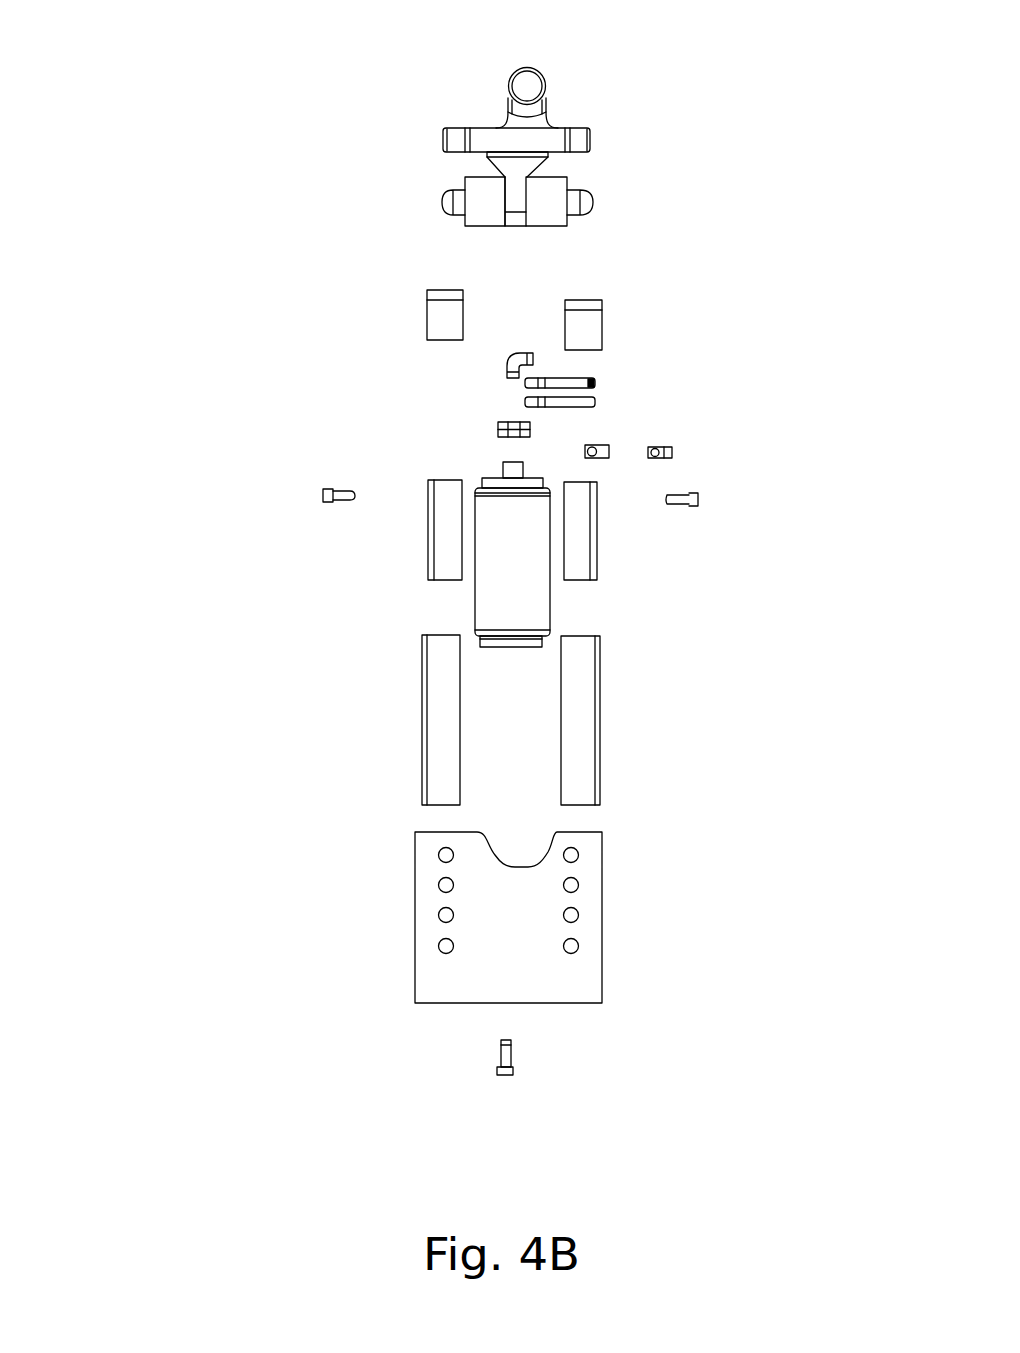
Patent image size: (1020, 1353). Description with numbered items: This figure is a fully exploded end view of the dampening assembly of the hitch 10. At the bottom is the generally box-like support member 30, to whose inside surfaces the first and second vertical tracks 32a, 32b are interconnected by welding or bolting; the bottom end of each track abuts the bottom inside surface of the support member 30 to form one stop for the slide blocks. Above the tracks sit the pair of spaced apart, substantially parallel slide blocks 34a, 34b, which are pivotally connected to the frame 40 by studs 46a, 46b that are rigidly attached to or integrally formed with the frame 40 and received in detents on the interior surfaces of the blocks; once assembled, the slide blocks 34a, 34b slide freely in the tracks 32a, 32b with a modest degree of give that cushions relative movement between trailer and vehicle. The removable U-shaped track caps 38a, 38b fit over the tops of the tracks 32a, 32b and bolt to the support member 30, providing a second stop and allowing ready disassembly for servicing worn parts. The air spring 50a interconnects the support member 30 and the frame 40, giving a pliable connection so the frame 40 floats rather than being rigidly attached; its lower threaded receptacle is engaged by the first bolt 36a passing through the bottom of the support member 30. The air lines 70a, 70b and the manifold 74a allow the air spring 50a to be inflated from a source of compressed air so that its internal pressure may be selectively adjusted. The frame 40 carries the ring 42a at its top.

The hitch 10 is at (183, 915).
The support member 30 is at (587, 973).
The first vertical track 32a is at (583, 783).
The second vertical track 32b is at (440, 762).
The slide block 34a is at (583, 561).
The slide block 34b is at (445, 537).
The first bolt 36a is at (512, 1072).
The track cap 38a is at (593, 327).
The track cap 38b is at (427, 310).
The frame 40 is at (492, 138).
The ring eye 42a is at (528, 85).
The stud 46a is at (587, 202).
The stud 46b is at (447, 195).
The first air spring 50a is at (537, 607).
The air line 70a is at (593, 398).
The air line 70b is at (527, 383).
The manifold 74a is at (530, 423).